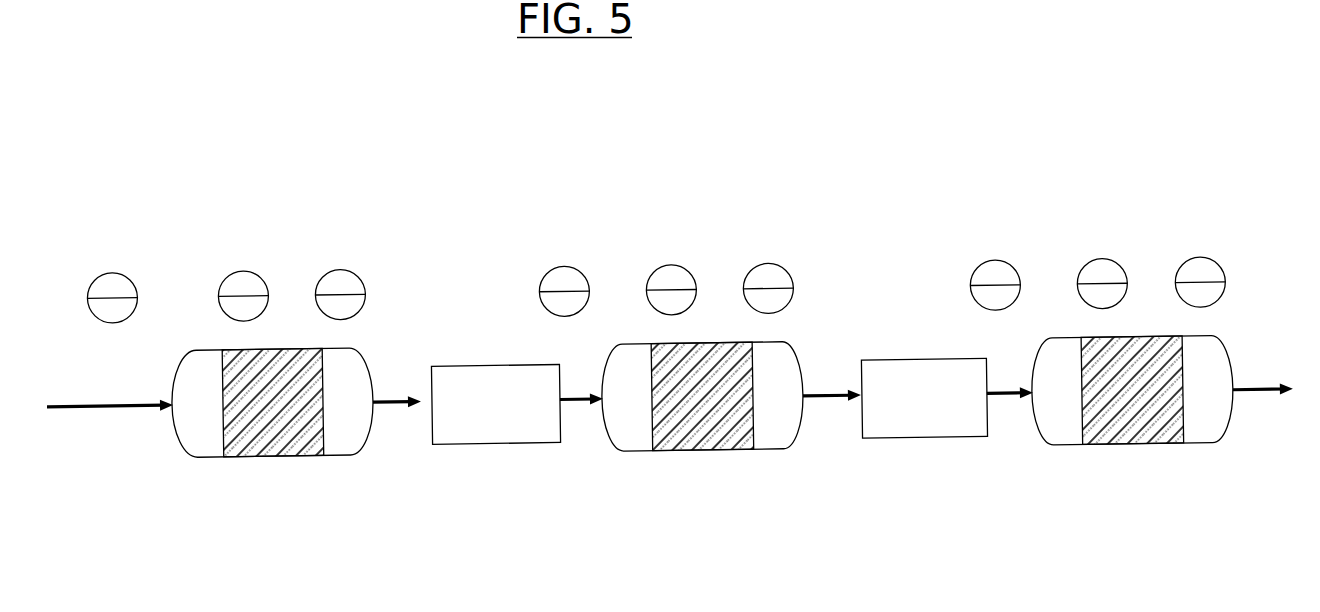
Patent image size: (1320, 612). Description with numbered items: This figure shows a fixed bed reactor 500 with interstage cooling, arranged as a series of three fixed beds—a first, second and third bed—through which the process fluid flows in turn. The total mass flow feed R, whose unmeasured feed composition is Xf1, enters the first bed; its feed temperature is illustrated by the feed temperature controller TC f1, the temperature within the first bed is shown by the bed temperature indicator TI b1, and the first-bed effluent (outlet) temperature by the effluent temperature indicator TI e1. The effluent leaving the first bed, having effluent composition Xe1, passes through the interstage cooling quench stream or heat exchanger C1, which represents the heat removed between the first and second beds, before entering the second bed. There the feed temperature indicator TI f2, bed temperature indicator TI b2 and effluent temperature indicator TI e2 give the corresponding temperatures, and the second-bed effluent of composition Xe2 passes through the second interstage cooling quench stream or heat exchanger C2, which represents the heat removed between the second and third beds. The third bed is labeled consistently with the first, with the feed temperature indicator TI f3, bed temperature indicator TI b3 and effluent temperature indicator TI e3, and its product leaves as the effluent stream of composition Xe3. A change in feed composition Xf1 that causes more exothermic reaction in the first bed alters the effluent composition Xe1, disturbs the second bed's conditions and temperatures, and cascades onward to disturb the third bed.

The fixed bed reactor 500 is at (908, 57).
The interstage cooling quench stream or heat exchanger C1 is at (495, 404).
The interstage cooling quench stream or heat exchanger C2 is at (924, 398).
The feed temperature controller TC- f1 is at (114, 406).
The bed 1 temperature indicator TI b1 is at (245, 415).
The effluent temperature indicator TI- e1 is at (342, 420).
The feed temperature indicator TC- f2 is at (566, 406).
The bed 2 temperature indicator TI b2 is at (673, 415).
The effluent temperature indicator TI- e2 is at (770, 420).
The feed temperature indicator TI- f3 is at (997, 406).
The bed 3 temperature indicator TI b3 is at (1104, 415).
The effluent temperature indicator TI- e3 is at (1202, 420).
The feed composition Xf1 is at (109, 407).
The bed effluent composition Xe1 is at (397, 394).
The bed 2 effluent stream Xe2 is at (832, 389).
The bed 3 effluent stream Xe3 is at (1263, 381).